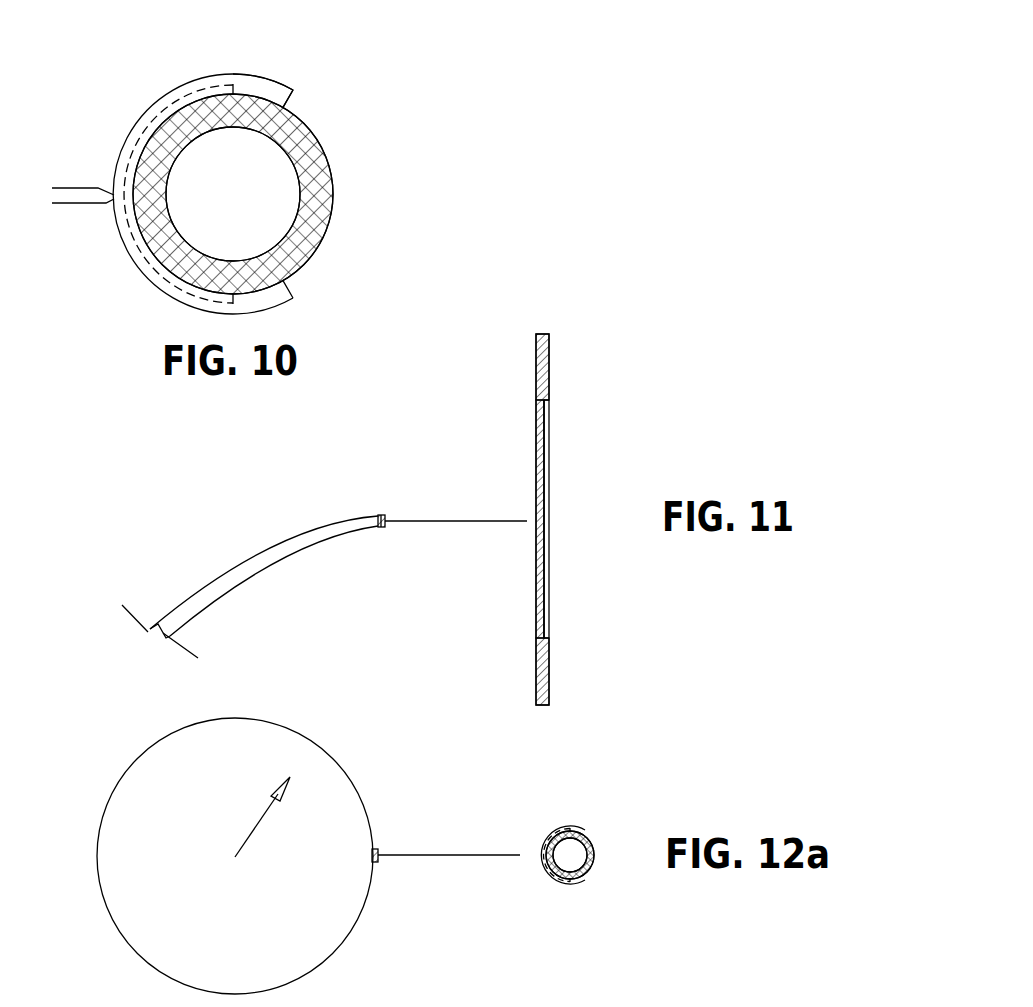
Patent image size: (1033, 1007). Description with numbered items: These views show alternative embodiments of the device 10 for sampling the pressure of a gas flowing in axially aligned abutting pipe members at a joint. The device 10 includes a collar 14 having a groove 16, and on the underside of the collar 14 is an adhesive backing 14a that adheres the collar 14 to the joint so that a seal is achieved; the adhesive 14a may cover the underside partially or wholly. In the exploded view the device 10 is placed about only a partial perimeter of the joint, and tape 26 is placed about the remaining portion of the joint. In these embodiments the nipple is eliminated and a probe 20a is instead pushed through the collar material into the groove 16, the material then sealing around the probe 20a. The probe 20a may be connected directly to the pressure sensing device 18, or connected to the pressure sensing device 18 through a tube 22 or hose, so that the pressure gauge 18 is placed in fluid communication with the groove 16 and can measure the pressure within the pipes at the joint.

In FIG. 11, the device 10 is at (433, 608).
In FIG. 10, the collar 14 is at (192, 75).
In FIG. 11, the collar 14 is at (550, 382).
In FIG. 11, the adhesive backing 14a is at (588, 745).
In FIG. 10, the groove 16 is at (148, 123).
In FIG. 11, the groove 16 is at (546, 604).
In FIG. 12a, the groove 16 is at (560, 880).
In FIG. 10, the pressure sensing device 18 is at (233, 194).
In FIG. 12a, the pressure sensing device 18 is at (349, 932).
In FIG. 10, the probe 20a is at (85, 205).
In FIG. 11, the probe 20a is at (470, 518).
In FIG. 12a, the probe 20a is at (470, 857).
In FIG. 11, the tube 22 is at (330, 538).
In FIG. 10, the tape 26 is at (300, 115).